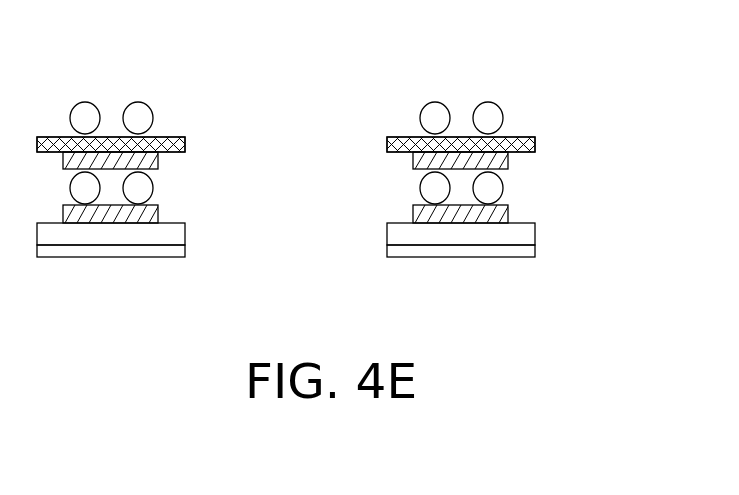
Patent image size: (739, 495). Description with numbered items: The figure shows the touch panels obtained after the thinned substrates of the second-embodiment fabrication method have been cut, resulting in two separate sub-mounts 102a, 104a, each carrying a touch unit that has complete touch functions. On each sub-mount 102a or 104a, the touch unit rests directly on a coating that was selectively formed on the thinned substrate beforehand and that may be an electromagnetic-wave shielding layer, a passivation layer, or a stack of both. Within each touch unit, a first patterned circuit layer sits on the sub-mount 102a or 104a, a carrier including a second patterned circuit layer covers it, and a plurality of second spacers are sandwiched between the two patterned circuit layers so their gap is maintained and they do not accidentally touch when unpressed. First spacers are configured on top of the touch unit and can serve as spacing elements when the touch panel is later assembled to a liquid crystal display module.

The sub-mount 102a is at (173, 233).
The sub-mount 104a is at (510, 227).